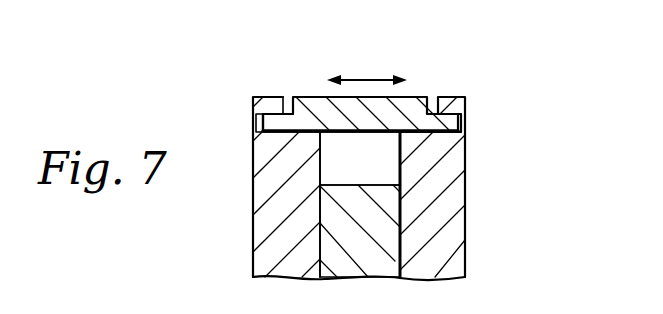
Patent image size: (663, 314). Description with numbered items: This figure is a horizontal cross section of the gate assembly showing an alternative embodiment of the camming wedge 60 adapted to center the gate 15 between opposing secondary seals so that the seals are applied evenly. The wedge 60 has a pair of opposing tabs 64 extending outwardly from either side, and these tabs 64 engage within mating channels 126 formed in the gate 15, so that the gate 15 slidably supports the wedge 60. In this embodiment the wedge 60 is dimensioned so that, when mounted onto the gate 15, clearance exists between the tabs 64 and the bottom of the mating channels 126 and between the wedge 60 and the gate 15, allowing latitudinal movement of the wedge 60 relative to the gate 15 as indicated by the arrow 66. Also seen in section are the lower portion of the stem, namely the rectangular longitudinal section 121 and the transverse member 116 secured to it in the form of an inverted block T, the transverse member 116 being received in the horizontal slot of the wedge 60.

The gate 15 is at (447, 248).
The camming wedge 60 is at (410, 102).
The tabs 64 is at (267, 115).
The arrow 66 is at (373, 80).
The transverse member 116 is at (385, 163).
The longitudinal section 121 is at (375, 205).
The mating channels 126 is at (452, 134).